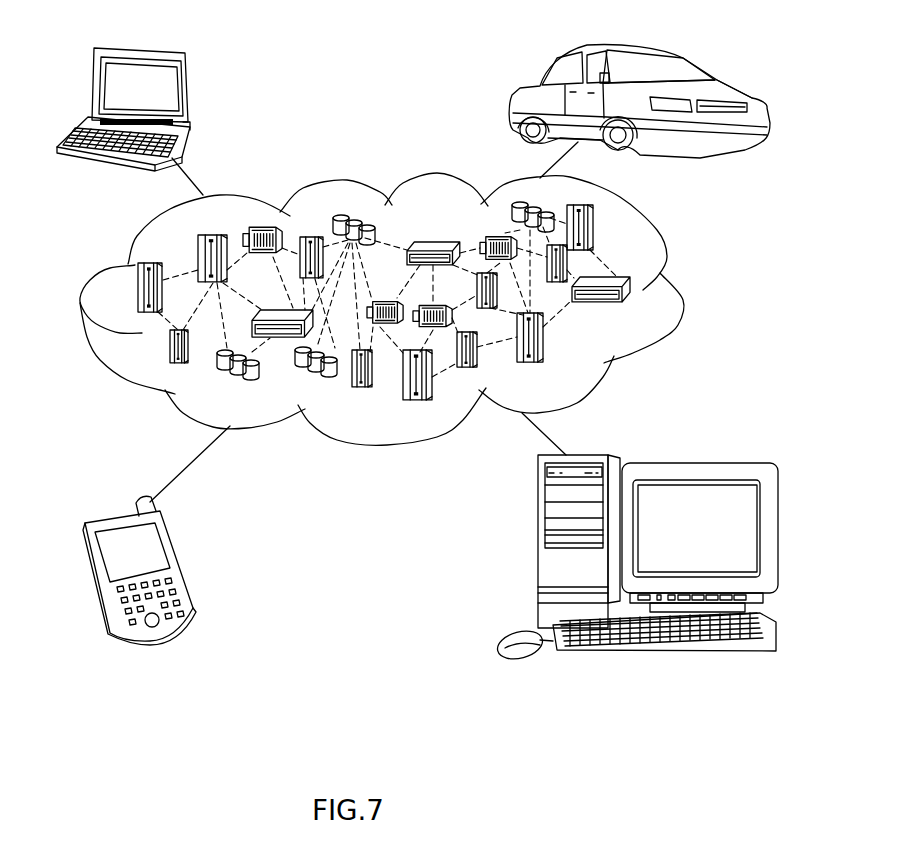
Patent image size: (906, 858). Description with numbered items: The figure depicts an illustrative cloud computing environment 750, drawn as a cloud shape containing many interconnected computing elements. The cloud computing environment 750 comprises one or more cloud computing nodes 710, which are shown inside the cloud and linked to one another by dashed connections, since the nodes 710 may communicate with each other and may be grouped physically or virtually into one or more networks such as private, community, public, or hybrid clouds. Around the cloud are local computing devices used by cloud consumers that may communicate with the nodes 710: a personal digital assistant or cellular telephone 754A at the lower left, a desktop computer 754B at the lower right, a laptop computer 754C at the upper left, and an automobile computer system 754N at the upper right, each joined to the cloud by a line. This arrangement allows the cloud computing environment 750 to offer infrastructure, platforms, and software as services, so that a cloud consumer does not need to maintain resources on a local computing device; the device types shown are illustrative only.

The cloud computing nodes 710 is at (429, 309).
The cloud computing environment 750 is at (667, 258).
The personal digital assistant (PDA) or cellular telephone 754A is at (180, 566).
The desktop computer 754B is at (538, 547).
The laptop computer 754C is at (188, 90).
The automobile computer system 754N is at (519, 92).